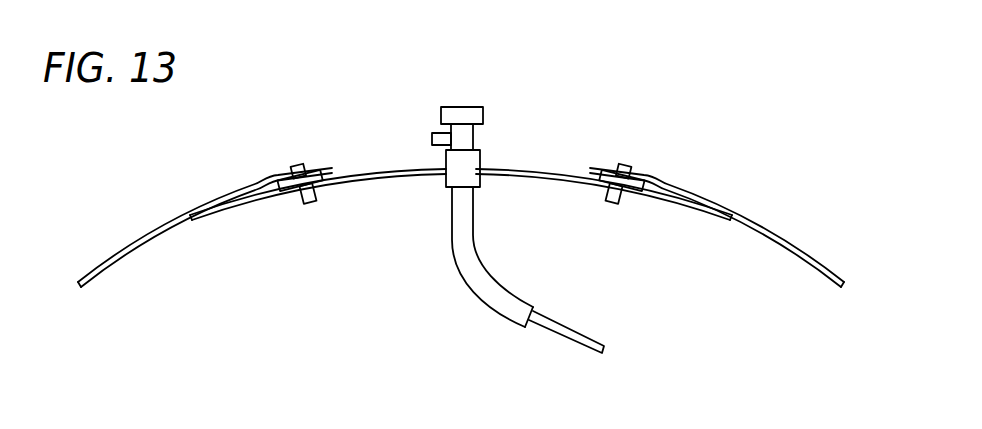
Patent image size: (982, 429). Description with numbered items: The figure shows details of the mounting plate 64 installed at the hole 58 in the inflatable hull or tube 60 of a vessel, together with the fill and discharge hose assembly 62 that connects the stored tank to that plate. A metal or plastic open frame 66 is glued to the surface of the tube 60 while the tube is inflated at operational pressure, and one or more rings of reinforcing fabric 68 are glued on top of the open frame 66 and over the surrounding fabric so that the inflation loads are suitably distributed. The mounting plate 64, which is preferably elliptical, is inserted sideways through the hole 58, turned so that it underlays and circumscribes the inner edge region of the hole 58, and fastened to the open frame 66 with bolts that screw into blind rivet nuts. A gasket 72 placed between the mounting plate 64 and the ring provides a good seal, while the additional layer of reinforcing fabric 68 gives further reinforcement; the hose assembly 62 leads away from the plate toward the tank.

The hole 58 is at (525, 82).
The inflatable hull or tube 60 is at (790, 240).
The hose assembly 62 is at (552, 283).
The mounting plate 64 is at (362, 173).
The open frame 66 is at (322, 177).
The reinforcing fabric 68 is at (222, 200).
The gasket 72 is at (332, 178).